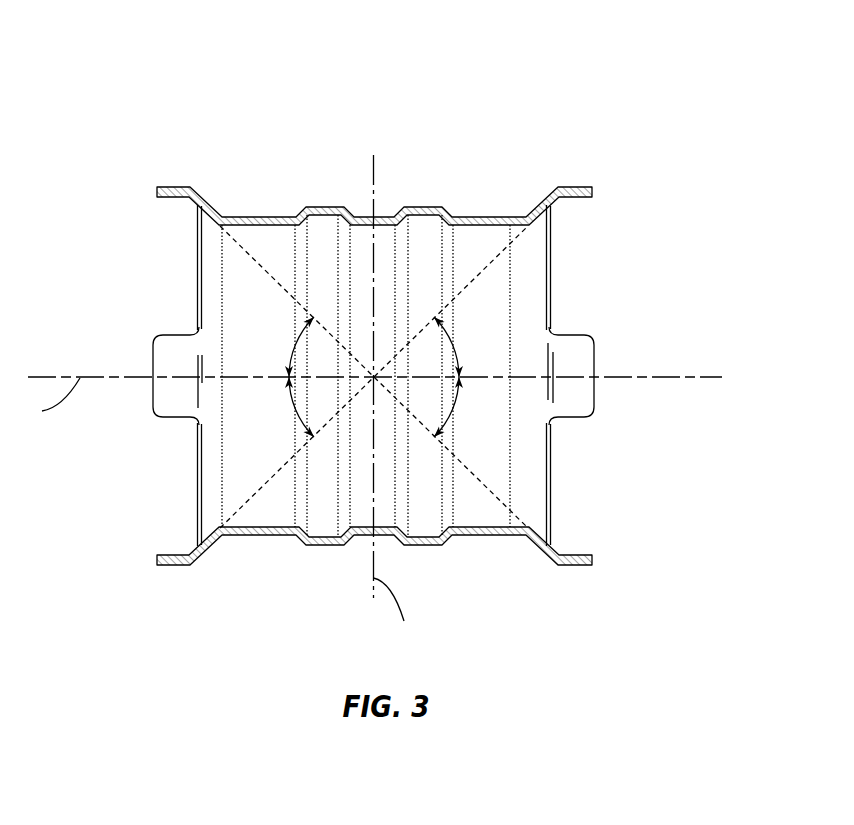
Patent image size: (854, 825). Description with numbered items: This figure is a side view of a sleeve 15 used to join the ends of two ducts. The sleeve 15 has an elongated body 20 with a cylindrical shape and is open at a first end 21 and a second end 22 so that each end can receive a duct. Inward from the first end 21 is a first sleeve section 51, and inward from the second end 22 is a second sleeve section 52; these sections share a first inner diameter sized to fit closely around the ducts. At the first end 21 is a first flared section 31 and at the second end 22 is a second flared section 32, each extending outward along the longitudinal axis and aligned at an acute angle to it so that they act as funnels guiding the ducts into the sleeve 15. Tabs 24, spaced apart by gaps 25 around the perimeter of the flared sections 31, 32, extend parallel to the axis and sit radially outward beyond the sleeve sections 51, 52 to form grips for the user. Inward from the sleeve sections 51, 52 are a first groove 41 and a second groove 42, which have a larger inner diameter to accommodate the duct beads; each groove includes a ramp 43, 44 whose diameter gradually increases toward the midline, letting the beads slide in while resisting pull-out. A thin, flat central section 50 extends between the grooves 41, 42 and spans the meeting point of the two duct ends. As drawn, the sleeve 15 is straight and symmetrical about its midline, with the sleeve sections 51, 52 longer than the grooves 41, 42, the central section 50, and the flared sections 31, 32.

The sleeve 15 is at (497, 95).
The elongated body 20 is at (260, 217).
The first end 21 is at (197, 243).
The second end 22 is at (547, 240).
The tabs 24 is at (158, 189).
The gaps 25 is at (162, 268).
The first flared section 31 is at (198, 443).
The second flared section 32 is at (547, 450).
The first groove 41 is at (318, 208).
The second groove 42 is at (427, 208).
The ramp 43 is at (300, 213).
The ramp 44 is at (447, 210).
The central section 50 is at (388, 217).
The first sleeve section 51 is at (253, 512).
The second sleeve section 52 is at (475, 508).